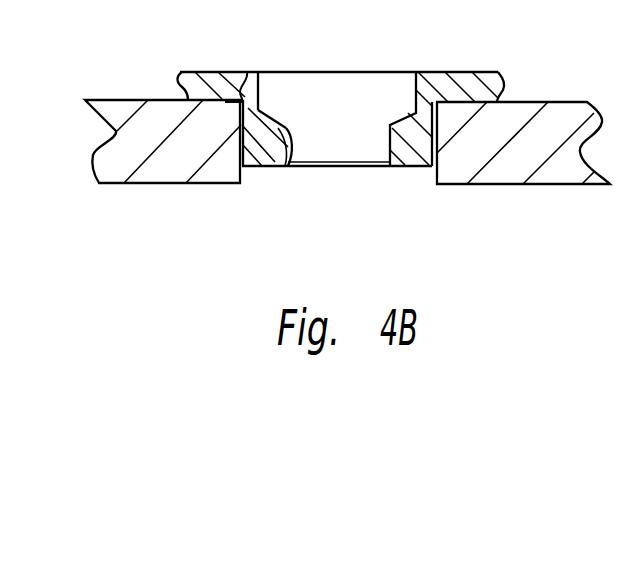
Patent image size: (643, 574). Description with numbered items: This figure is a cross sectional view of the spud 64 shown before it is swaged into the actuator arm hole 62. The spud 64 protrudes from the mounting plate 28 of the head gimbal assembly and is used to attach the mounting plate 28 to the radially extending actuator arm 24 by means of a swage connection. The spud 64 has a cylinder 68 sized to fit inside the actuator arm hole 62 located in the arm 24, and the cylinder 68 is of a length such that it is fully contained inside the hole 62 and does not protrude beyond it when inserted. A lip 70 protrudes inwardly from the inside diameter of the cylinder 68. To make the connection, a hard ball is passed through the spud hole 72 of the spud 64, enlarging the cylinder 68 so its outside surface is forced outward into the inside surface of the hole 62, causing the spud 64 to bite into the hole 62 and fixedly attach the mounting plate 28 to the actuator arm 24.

The actuator arm 24 is at (90, 163).
The mounting plate 28 is at (505, 88).
The spud hole 72 is at (295, 72).
The cylinder 68 is at (213, 72).
The actuator arm hole 62 is at (245, 170).
The lip 70 is at (275, 167).
The spud 64 is at (398, 182).